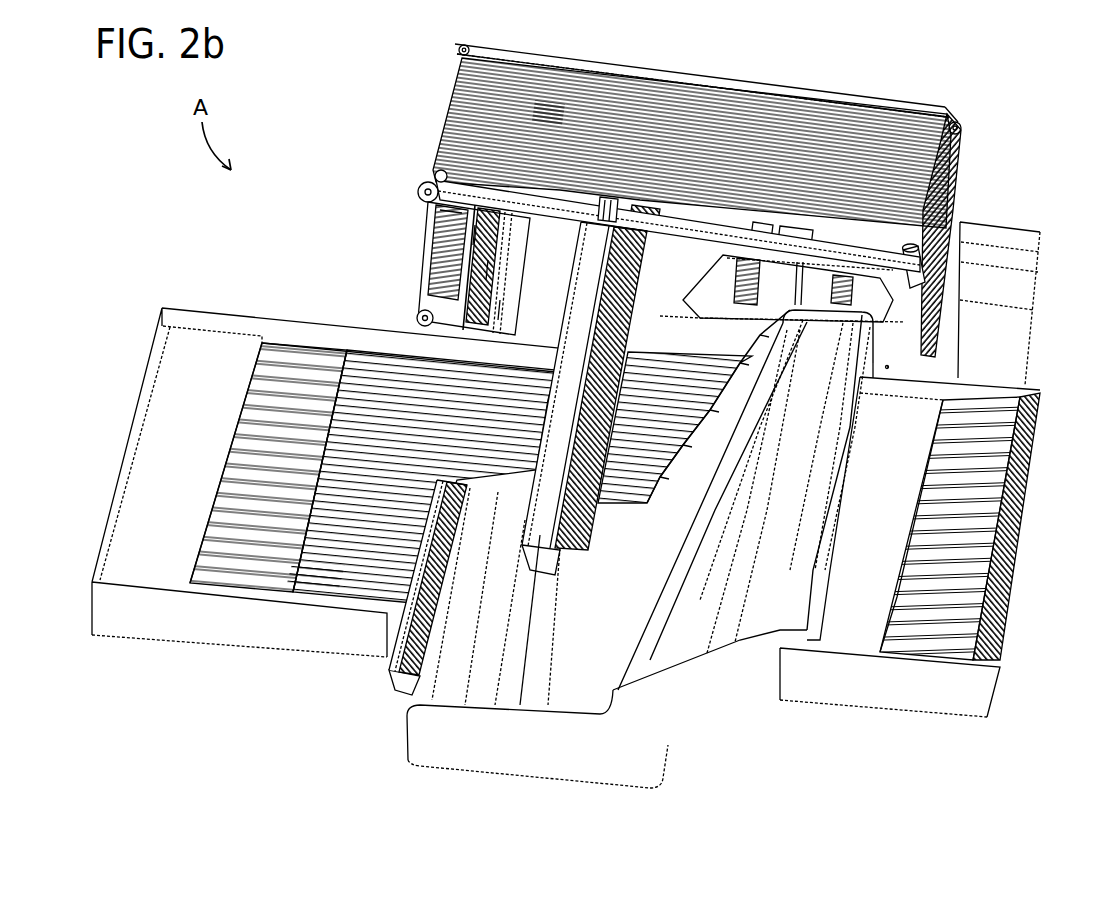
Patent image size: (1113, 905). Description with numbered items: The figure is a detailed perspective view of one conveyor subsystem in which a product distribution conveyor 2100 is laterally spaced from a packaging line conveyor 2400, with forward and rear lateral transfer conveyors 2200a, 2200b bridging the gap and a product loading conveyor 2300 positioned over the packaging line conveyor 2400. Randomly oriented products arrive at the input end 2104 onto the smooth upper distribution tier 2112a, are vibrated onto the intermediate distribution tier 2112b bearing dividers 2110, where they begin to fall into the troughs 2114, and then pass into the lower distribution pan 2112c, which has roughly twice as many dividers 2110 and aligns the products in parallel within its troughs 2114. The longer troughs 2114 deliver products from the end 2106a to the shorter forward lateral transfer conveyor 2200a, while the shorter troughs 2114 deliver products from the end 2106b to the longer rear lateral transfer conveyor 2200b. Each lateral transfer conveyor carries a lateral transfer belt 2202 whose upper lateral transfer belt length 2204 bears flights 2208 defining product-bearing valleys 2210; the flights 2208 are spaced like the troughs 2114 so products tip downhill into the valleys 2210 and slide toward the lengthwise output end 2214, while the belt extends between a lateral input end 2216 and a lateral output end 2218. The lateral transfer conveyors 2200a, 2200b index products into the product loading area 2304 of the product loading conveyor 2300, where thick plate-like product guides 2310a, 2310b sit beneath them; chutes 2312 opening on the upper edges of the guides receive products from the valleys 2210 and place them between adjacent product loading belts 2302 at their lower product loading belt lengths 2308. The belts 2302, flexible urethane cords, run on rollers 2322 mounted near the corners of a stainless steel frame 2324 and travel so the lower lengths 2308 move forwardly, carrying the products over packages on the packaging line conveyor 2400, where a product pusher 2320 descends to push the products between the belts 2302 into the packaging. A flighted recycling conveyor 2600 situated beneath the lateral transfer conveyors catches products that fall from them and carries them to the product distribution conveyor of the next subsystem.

The product distribution conveyor 2100 is at (206, 312).
The product distribution conveyor input end 2104 is at (220, 350).
The product distribution conveyor input end 2106a is at (510, 590).
The product distribution conveyor input end 2106b is at (397, 637).
The dividers 2110 is at (232, 557).
The upper distribution tier 2112a is at (158, 558).
The intermediate distribution tier 2112b is at (273, 577).
The lower distribution pan 2112c is at (340, 567).
The troughs 2114 is at (250, 563).
The forward lateral transfer conveyor 2200a is at (600, 470).
The rear lateral transfer conveyor 2200b is at (515, 243).
The lateral transfer belt 2202 is at (545, 265).
The upper lateral transfer belt length 2204 is at (540, 290).
The flights 2208 is at (535, 305).
The valleys 2210 is at (530, 328).
The lateral transfer conveyor lengthwise output end 2214 is at (440, 625).
The lateral transfer conveyor lateral input end 2216 is at (403, 647).
The lateral transfer conveyor lateral output end 2218 is at (548, 113).
The product loading conveyor 2300 is at (793, 80).
The product loading belts 2302 is at (803, 110).
The product loading area 2304 is at (581, 245).
The lower product loading belt lengths 2308 is at (790, 303).
The product guide 2310a is at (713, 277).
The product guide 2310b is at (597, 253).
The chutes 2312 is at (420, 173).
The product pusher 2320 is at (823, 268).
The rollers 2322 is at (822, 282).
The frame 2324 is at (893, 110).
The packaging line conveyor 2400 is at (993, 282).
The flighted recycling conveyor 2600 is at (780, 503).